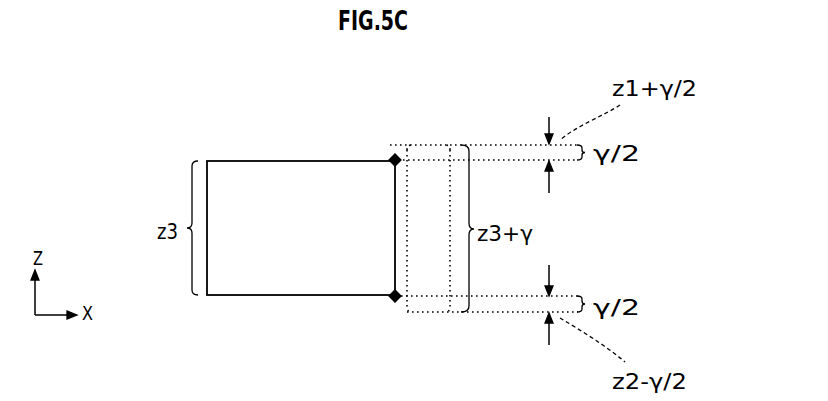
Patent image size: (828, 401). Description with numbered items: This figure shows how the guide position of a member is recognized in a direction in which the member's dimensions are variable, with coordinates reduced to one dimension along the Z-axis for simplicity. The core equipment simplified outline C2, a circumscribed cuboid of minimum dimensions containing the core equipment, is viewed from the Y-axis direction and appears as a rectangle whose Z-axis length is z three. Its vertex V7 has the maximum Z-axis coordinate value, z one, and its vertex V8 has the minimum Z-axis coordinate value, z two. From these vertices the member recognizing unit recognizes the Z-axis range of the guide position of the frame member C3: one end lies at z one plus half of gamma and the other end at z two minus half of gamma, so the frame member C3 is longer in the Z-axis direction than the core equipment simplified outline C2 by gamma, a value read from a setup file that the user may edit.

The core equipment simplified outline C2 is at (243, 161).
The frame member C3 is at (427, 145).
The vertex V7 is at (391, 159).
The vertex V8 is at (392, 298).